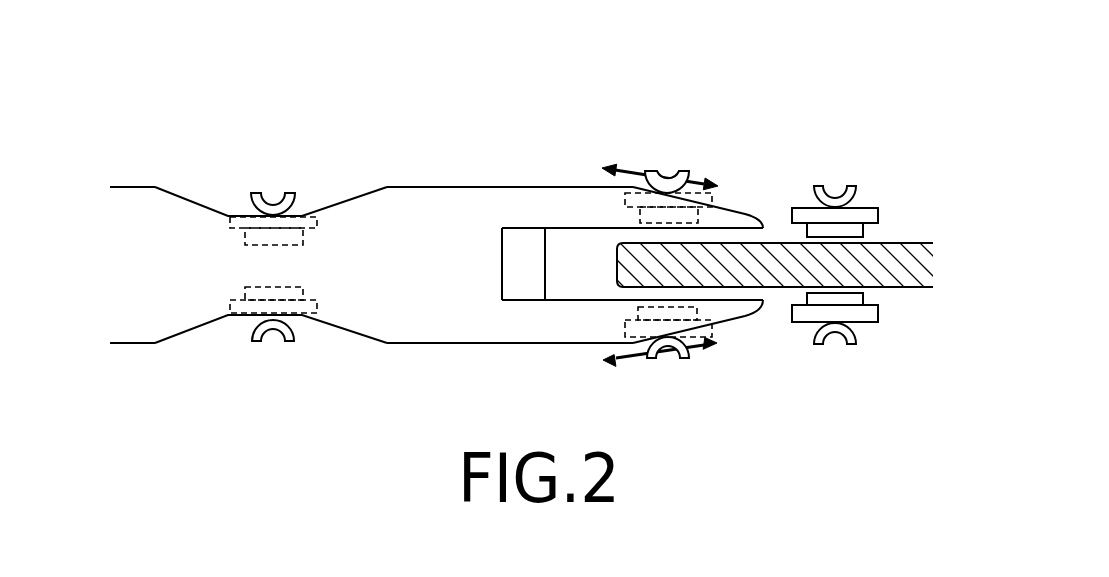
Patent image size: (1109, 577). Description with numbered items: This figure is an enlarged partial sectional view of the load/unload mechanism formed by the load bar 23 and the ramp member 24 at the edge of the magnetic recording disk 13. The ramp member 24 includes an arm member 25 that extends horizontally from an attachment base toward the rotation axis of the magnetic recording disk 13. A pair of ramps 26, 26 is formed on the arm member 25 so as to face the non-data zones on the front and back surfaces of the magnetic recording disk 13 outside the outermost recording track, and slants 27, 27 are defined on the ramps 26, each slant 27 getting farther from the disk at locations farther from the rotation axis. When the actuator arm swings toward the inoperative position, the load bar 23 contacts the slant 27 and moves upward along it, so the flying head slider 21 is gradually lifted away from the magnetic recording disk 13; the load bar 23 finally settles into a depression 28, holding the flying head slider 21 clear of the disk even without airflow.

The magnetic recording disk 13 is at (617, 270).
The flying head slider 21 is at (865, 232).
The load bar 23 is at (270, 203).
The ramp member 24 is at (471, 141).
The arm member 25 is at (145, 187).
The ramp 26 is at (582, 198).
The slant 27 is at (738, 218).
The depression 28 is at (328, 208).